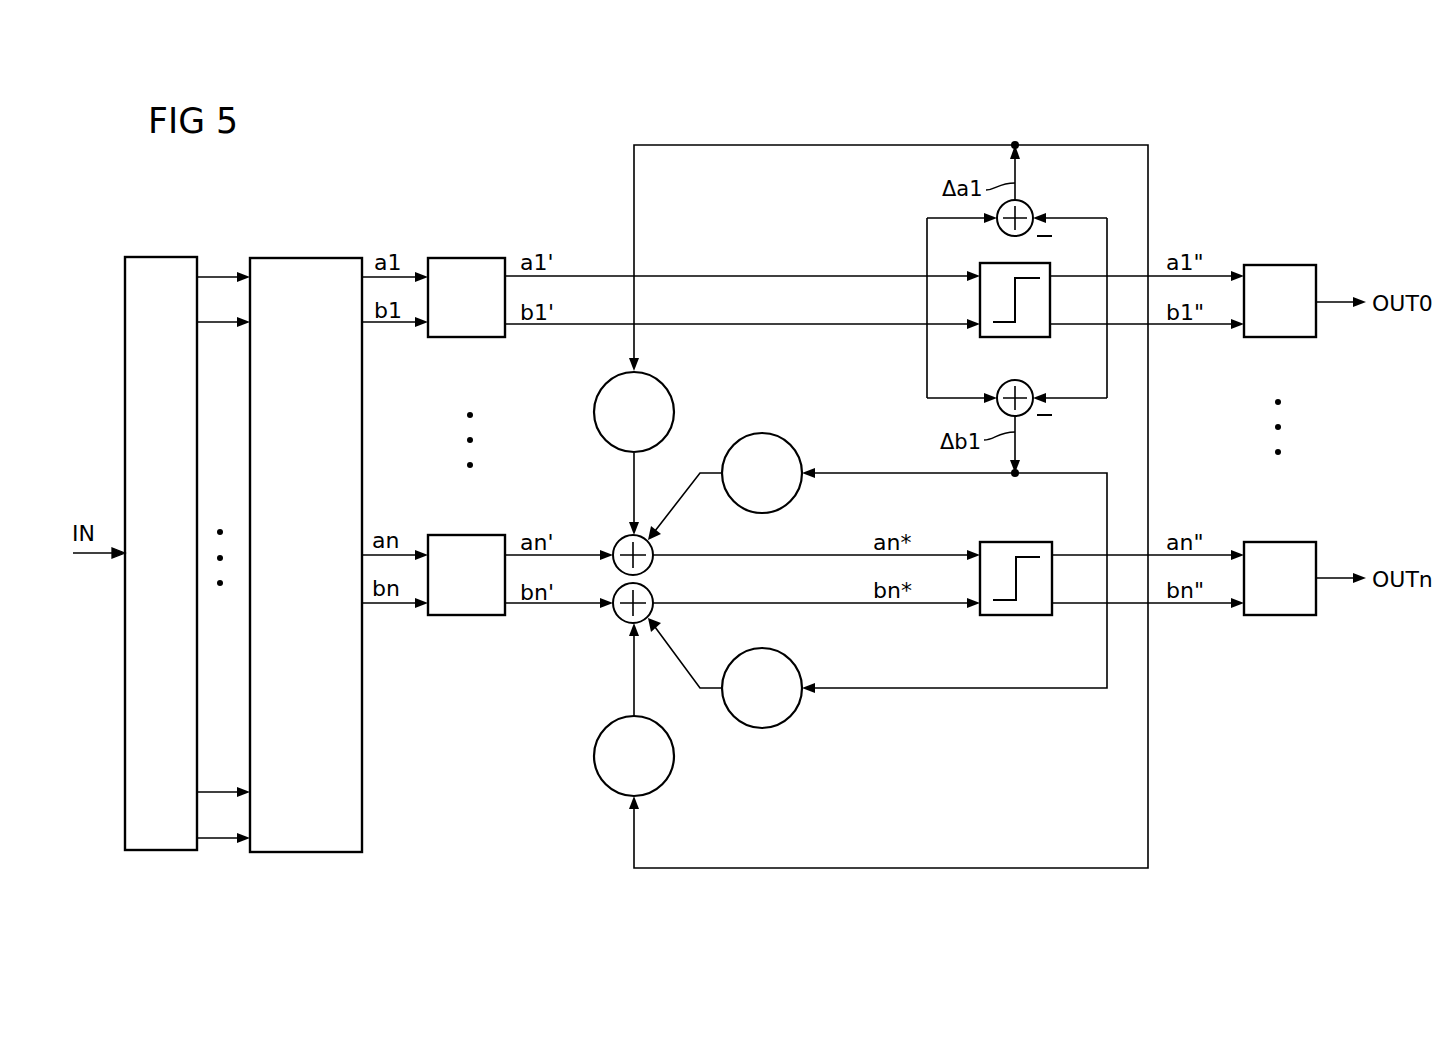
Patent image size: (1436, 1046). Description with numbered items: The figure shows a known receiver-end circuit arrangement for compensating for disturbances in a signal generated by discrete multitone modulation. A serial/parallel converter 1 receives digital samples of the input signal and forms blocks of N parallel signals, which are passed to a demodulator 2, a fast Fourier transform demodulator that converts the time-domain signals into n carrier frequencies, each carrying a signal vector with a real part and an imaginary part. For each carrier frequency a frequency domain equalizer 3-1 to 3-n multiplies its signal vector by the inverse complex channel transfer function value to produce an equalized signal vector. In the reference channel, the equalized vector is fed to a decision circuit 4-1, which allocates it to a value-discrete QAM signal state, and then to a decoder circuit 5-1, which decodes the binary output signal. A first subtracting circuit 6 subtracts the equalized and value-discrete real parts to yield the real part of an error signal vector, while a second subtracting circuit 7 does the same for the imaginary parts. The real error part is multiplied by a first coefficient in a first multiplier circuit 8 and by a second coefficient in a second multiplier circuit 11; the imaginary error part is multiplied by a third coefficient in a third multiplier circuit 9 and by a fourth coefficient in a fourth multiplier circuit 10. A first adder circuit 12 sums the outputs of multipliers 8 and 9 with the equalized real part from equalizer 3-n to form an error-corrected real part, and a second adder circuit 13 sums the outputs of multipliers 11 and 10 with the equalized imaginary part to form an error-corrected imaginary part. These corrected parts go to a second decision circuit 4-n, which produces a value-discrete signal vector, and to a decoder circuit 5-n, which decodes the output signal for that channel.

The serial/parallel converter 1 is at (166, 257).
The demodulator 2 is at (293, 258).
The frequency domain equalizer 3-1 is at (460, 258).
The frequency domain equalizer 3-n is at (465, 615).
The decision circuit 4-1 is at (1040, 264).
The second decision circuit 4-n is at (1017, 542).
The decoder circuit 5-1 is at (1280, 265).
The decoder circuit 5-n is at (1305, 542).
The first subtracting circuit 6 is at (1028, 206).
The second subtracting circuit 7 is at (1028, 386).
The first multiplier circuit 8 is at (672, 392).
The third multiplier circuit 9 is at (790, 442).
The fourth multiplier circuit 10 is at (788, 724).
The second multiplier circuit 11 is at (664, 782).
The first adder circuit 12 is at (617, 540).
The second adder circuit 13 is at (617, 620).